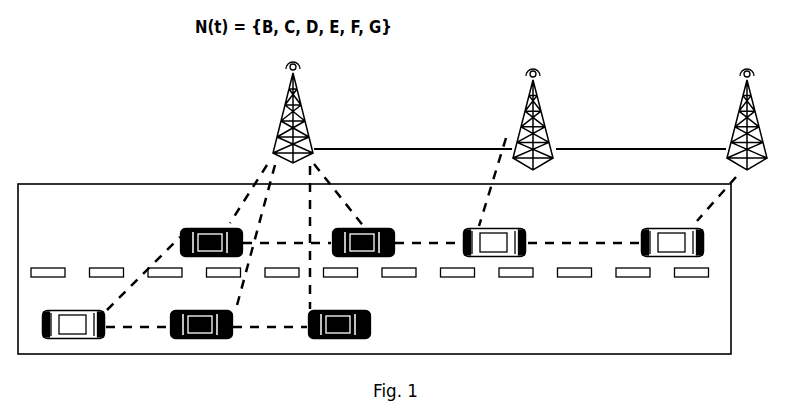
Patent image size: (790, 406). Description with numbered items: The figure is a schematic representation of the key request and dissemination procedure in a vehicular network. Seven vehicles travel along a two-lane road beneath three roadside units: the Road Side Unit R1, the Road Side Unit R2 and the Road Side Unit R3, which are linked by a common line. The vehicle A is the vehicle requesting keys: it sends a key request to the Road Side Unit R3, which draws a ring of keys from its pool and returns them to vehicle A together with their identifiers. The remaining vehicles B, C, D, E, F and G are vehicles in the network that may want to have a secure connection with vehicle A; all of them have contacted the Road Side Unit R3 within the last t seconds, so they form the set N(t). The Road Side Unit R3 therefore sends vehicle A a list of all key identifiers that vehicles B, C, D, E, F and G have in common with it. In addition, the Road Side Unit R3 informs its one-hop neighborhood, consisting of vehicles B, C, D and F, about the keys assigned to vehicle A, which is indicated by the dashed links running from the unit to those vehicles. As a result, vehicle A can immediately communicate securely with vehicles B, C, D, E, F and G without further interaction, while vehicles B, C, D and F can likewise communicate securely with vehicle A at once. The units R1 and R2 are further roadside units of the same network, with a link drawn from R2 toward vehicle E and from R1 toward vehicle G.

The vehicle node requesting keys A is at (74, 314).
The vehicle node B is at (202, 315).
The vehicle node C is at (340, 315).
The vehicle node D is at (212, 233).
The vehicle node E is at (495, 234).
The vehicle node F is at (364, 233).
The vehicle node G is at (673, 233).
The Road Side Unit R1 is at (747, 131).
The Road Side Unit R2 is at (533, 132).
The Road Side Unit R3 is at (293, 125).